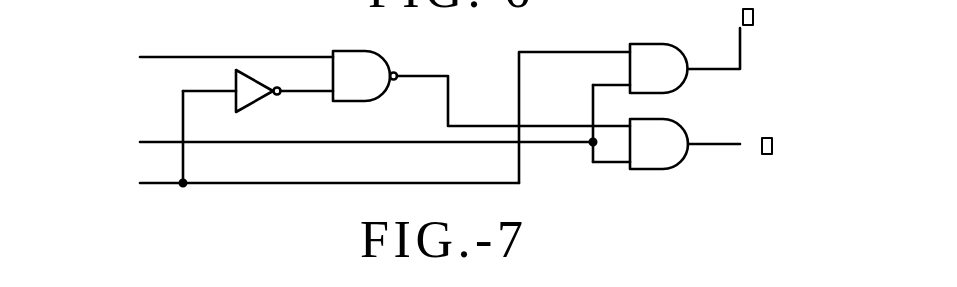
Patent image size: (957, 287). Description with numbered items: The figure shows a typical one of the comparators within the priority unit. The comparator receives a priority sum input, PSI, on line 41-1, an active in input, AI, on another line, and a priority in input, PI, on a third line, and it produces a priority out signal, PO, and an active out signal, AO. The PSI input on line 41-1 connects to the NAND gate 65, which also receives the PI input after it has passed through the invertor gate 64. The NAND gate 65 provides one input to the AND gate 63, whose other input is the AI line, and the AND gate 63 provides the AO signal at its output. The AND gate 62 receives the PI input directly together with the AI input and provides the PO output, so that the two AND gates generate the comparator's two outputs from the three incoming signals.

The line 41-1 is at (203, 57).
The invertor gate 64 is at (253, 98).
The NAND gate 65 is at (363, 52).
The AND gate 62 is at (657, 47).
The AND gate 63 is at (655, 123).